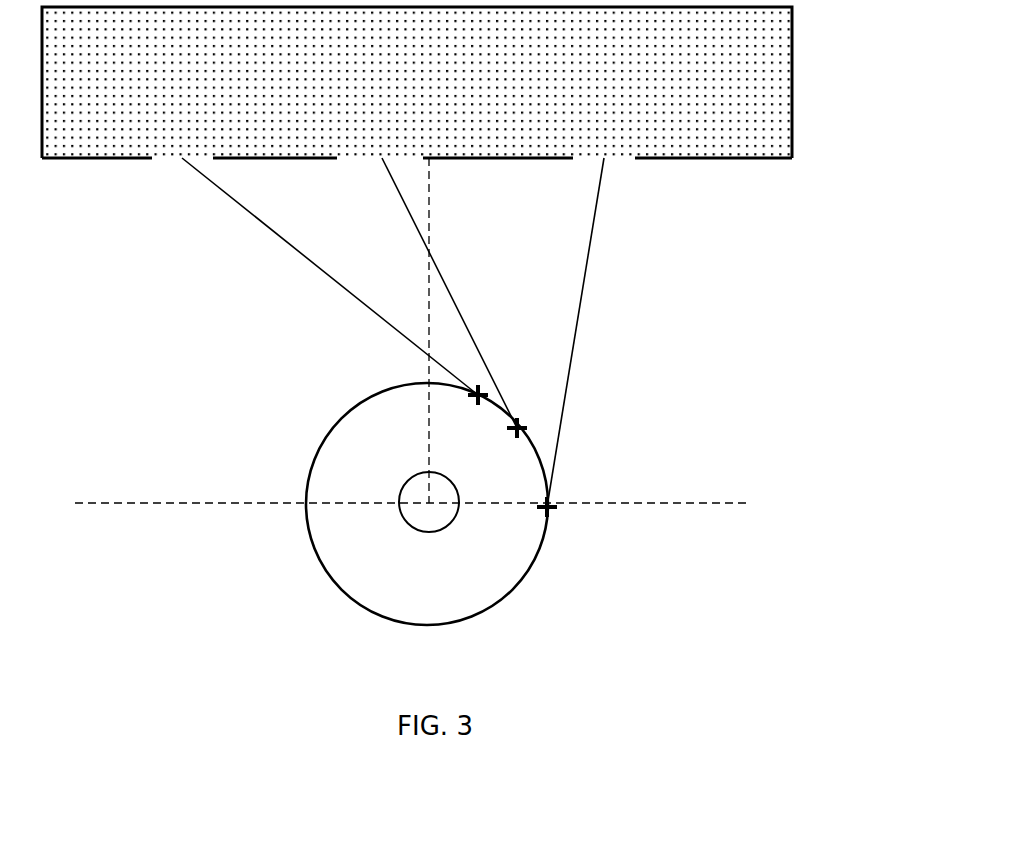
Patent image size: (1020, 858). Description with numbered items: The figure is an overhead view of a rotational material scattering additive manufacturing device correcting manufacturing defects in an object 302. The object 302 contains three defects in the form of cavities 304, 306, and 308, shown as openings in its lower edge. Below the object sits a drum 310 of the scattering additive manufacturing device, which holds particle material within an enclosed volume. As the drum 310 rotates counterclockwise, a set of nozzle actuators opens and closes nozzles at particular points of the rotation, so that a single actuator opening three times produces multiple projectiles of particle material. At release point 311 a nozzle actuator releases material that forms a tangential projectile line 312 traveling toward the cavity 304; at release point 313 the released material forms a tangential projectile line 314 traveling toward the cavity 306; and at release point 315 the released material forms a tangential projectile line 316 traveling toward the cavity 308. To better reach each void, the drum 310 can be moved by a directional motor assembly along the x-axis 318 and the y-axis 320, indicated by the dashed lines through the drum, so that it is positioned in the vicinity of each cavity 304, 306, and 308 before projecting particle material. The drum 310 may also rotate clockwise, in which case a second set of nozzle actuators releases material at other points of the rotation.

The object 302 is at (794, 94).
The cavity 304 is at (618, 133).
The cavity 306 is at (376, 138).
The cavity 308 is at (172, 137).
The drum 310 is at (415, 579).
The release point 311 is at (558, 510).
The tangential projectile line 312 is at (578, 318).
The release point 313 is at (533, 418).
The tangential projectile line 314 is at (445, 278).
The release point 315 is at (475, 405).
The tangential projectile line 316 is at (320, 270).
The x-axis 318 is at (78, 503).
The y-axis 320 is at (427, 403).